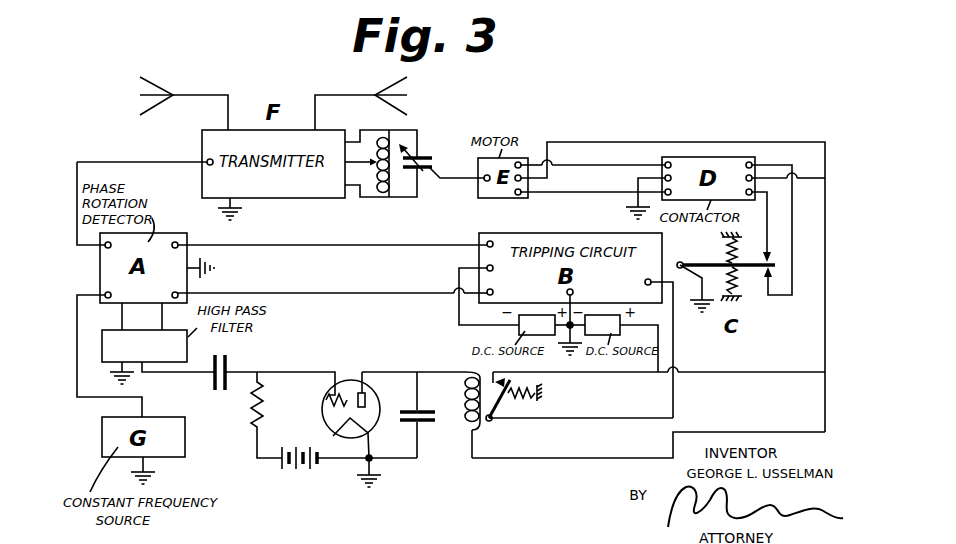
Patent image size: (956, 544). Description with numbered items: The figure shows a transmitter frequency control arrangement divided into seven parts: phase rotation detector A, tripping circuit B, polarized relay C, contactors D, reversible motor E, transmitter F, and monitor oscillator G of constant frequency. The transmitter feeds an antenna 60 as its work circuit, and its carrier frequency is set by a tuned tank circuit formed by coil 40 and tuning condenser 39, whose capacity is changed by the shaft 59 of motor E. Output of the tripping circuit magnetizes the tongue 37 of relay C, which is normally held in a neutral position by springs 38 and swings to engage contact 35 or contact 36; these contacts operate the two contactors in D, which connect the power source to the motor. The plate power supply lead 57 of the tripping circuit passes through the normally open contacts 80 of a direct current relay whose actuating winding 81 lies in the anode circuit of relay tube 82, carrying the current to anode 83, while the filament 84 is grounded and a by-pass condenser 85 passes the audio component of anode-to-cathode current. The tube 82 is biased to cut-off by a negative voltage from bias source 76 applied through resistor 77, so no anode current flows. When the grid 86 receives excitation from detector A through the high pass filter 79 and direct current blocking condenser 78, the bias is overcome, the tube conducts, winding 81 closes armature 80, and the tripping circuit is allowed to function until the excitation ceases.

The antenna 60 is at (222, 98).
The coil 40 is at (378, 191).
The tuning condenser 39 is at (426, 156).
The shaft 59 is at (458, 182).
The contact 35 is at (793, 279).
The contact 36 is at (778, 250).
The tongue 37 is at (698, 262).
The power source 38 is at (726, 243).
The plate power supply lead 57 is at (633, 420).
The contacts 80 is at (500, 405).
The actuating winding 81 is at (466, 408).
The by-pass condenser 85 is at (427, 403).
The relay tube 82 is at (349, 380).
The grid 86 is at (328, 403).
The anode 83 is at (368, 400).
The filament 84 is at (333, 438).
The direct current blocking condenser 78 is at (214, 383).
The resistor 77 is at (267, 423).
The bias source 76 is at (300, 451).
The high pass filter 79 is at (144, 343).